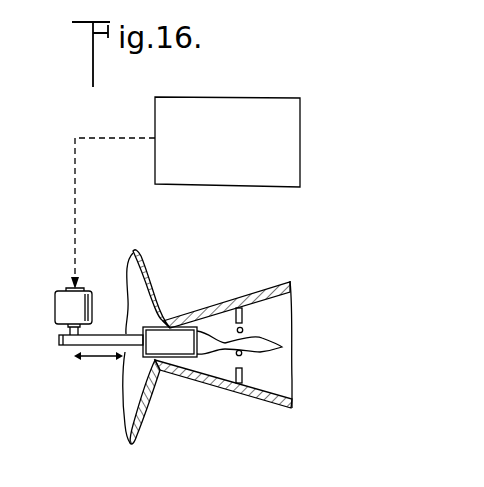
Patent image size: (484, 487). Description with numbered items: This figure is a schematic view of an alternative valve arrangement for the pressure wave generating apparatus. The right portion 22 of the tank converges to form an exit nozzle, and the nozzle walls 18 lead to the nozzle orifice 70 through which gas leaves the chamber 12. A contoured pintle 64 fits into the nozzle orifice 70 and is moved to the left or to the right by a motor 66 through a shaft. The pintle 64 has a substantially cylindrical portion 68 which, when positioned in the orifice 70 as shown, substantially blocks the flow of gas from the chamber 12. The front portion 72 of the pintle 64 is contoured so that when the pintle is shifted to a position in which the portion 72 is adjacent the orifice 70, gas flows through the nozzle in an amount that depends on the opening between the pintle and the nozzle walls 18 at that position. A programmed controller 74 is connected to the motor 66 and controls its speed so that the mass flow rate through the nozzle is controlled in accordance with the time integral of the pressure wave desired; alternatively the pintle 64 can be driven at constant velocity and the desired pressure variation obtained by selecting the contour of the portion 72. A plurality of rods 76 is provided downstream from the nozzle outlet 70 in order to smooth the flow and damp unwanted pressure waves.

The programmed controller 74 is at (277, 97).
The motor 66 is at (55, 305).
The cylindrical portion 68 is at (124, 368).
The chamber 12 is at (128, 319).
The right portion 22 is at (149, 266).
The nozzle 18 is at (215, 305).
The nozzle orifice 70 is at (168, 380).
The front portion 72 is at (225, 352).
The contoured pintle 64 is at (271, 351).
The rods 76 is at (242, 328).